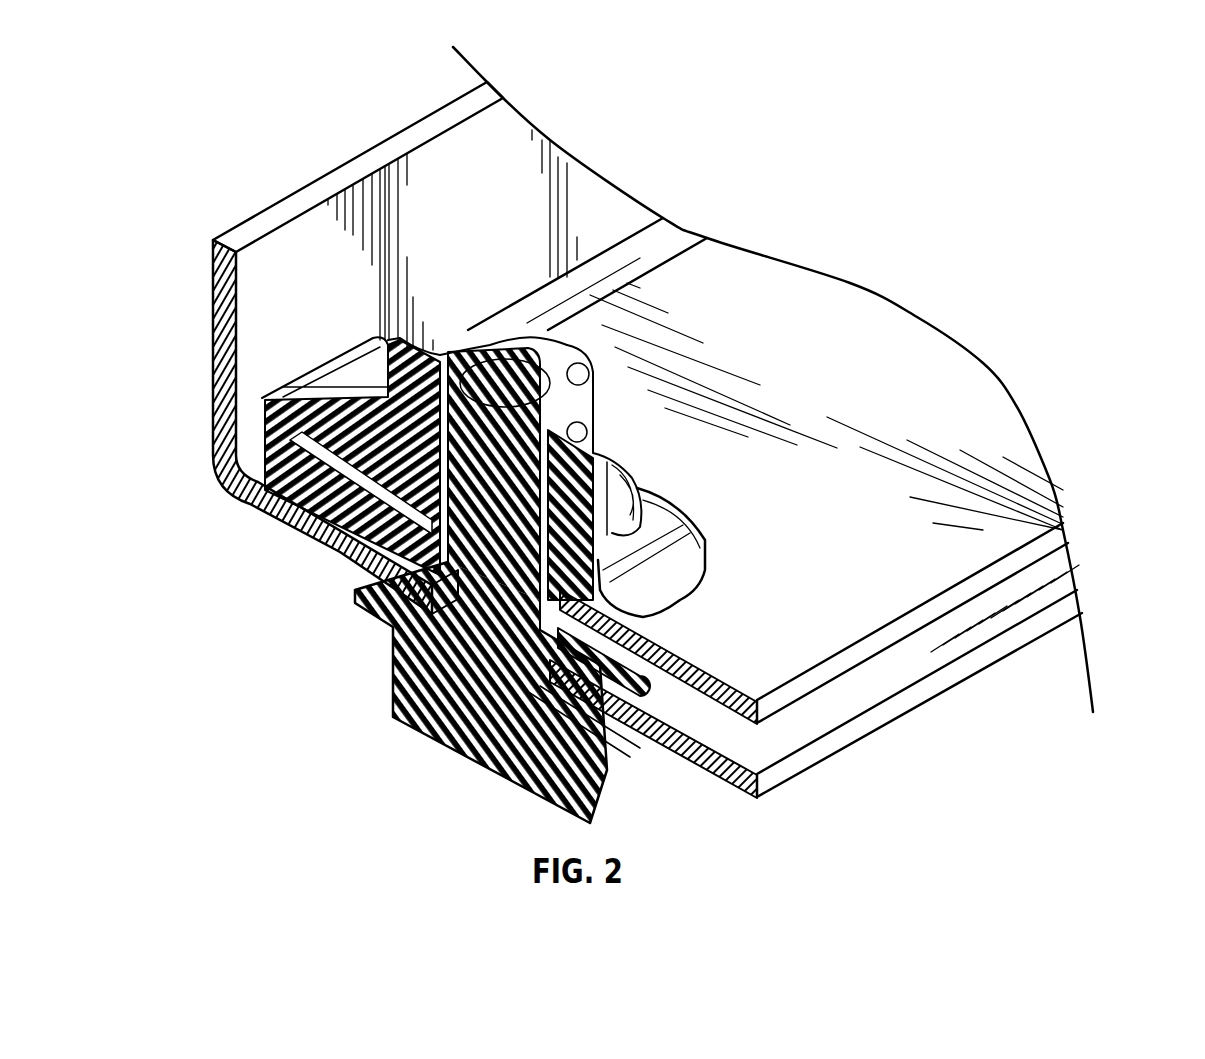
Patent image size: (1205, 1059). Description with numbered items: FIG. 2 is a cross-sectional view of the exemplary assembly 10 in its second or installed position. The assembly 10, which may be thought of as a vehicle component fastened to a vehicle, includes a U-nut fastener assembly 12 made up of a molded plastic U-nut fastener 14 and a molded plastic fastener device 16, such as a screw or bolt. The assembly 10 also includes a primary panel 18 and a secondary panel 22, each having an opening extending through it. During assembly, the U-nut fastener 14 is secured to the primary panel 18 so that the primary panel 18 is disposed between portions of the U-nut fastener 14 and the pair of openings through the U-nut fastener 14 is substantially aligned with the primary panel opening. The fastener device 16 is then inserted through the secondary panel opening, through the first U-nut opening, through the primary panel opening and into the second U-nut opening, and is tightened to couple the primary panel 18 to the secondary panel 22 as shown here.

The assembly 10 is at (938, 212).
The U-nut fastener assembly 12 is at (422, 604).
The U-nut fastener 14 is at (273, 412).
The fastener device 16 is at (428, 727).
The primary panel 18 is at (863, 652).
The secondary panel 22 is at (842, 740).